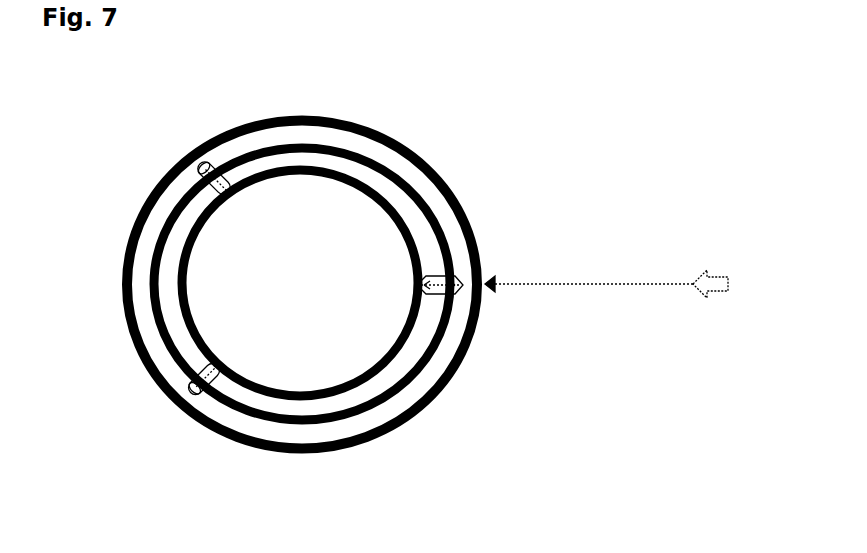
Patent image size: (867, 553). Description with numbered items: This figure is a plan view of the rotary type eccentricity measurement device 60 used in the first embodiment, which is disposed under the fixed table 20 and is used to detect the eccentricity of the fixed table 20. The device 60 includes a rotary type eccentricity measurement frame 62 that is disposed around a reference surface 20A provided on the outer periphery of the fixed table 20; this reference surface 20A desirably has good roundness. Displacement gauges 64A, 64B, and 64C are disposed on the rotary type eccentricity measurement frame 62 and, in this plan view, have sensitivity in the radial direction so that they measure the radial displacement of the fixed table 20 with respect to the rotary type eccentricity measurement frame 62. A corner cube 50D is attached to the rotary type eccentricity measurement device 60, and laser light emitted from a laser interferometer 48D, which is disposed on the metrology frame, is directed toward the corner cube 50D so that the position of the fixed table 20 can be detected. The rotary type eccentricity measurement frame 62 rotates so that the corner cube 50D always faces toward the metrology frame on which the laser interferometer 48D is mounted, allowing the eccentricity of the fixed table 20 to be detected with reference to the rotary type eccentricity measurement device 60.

The rotary type eccentricity measurement device 60 is at (402, 100).
The rotary type eccentricity measurement frame 62 is at (130, 333).
The fixed table 20 is at (400, 363).
The reference surface 20A is at (393, 197).
The displacement gauge 64A is at (213, 160).
The displacement gauge 64B is at (204, 398).
The displacement gauge 64C is at (463, 271).
The corner cube 50D is at (492, 295).
The laser interferometer 48D is at (715, 272).